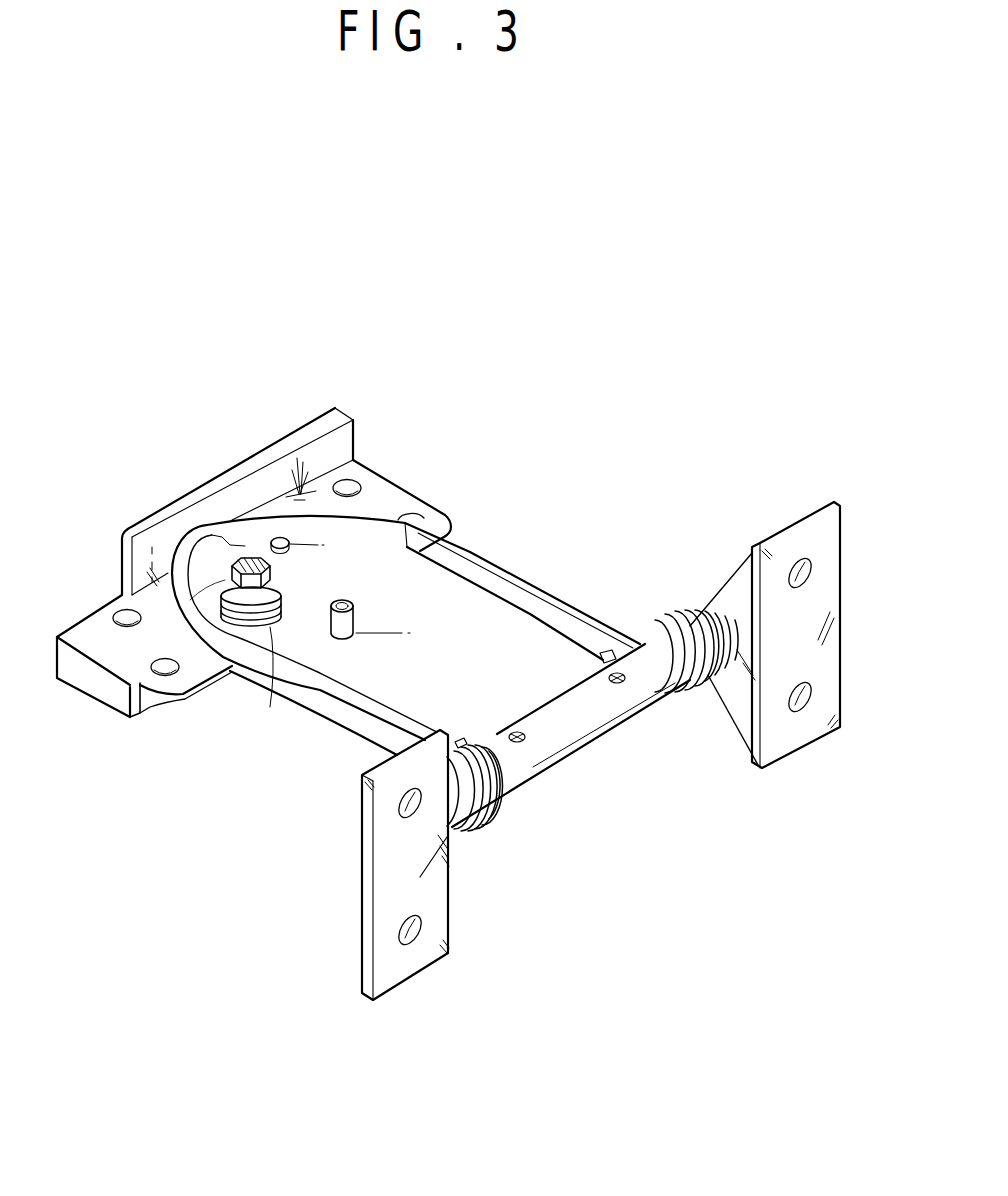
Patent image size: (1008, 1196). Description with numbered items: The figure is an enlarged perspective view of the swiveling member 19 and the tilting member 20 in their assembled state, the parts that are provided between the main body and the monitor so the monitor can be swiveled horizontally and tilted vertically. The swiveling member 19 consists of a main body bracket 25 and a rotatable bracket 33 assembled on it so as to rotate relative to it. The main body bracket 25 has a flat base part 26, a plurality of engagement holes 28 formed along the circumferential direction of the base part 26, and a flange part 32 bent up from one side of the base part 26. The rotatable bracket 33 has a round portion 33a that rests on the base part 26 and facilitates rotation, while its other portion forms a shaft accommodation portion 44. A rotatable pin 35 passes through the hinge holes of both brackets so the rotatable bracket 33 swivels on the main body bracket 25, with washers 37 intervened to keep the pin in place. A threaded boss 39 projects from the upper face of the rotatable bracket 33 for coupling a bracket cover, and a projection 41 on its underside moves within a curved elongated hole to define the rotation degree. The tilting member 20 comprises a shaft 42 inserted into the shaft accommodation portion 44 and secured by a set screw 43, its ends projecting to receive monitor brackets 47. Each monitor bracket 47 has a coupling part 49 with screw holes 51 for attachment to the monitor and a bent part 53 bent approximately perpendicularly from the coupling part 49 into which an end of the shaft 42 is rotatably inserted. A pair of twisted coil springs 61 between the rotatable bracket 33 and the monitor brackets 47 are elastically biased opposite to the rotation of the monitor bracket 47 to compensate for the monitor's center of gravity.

The swiveling member 19 is at (523, 392).
The tilting member 20 is at (767, 413).
The main body bracket 25 is at (472, 362).
The base part 26 is at (377, 488).
The engagement holes 28 is at (340, 487).
The flange part 32 is at (347, 428).
The rotatable bracket 33 is at (448, 598).
The round portion 33a is at (298, 528).
The rotatable pin 35 is at (225, 578).
The washers 37 is at (270, 627).
The boss 39 is at (342, 640).
The projection 41 is at (278, 537).
The shaft 42 is at (640, 647).
The set screw 43 is at (527, 733).
The shaft accommodation portion 44 is at (523, 763).
The monitor bracket 47 is at (807, 458).
The coupling part 49 is at (787, 527).
The screw holes 51 is at (810, 573).
The bent part 53 is at (749, 588).
The twisted coil springs 61 is at (500, 797).